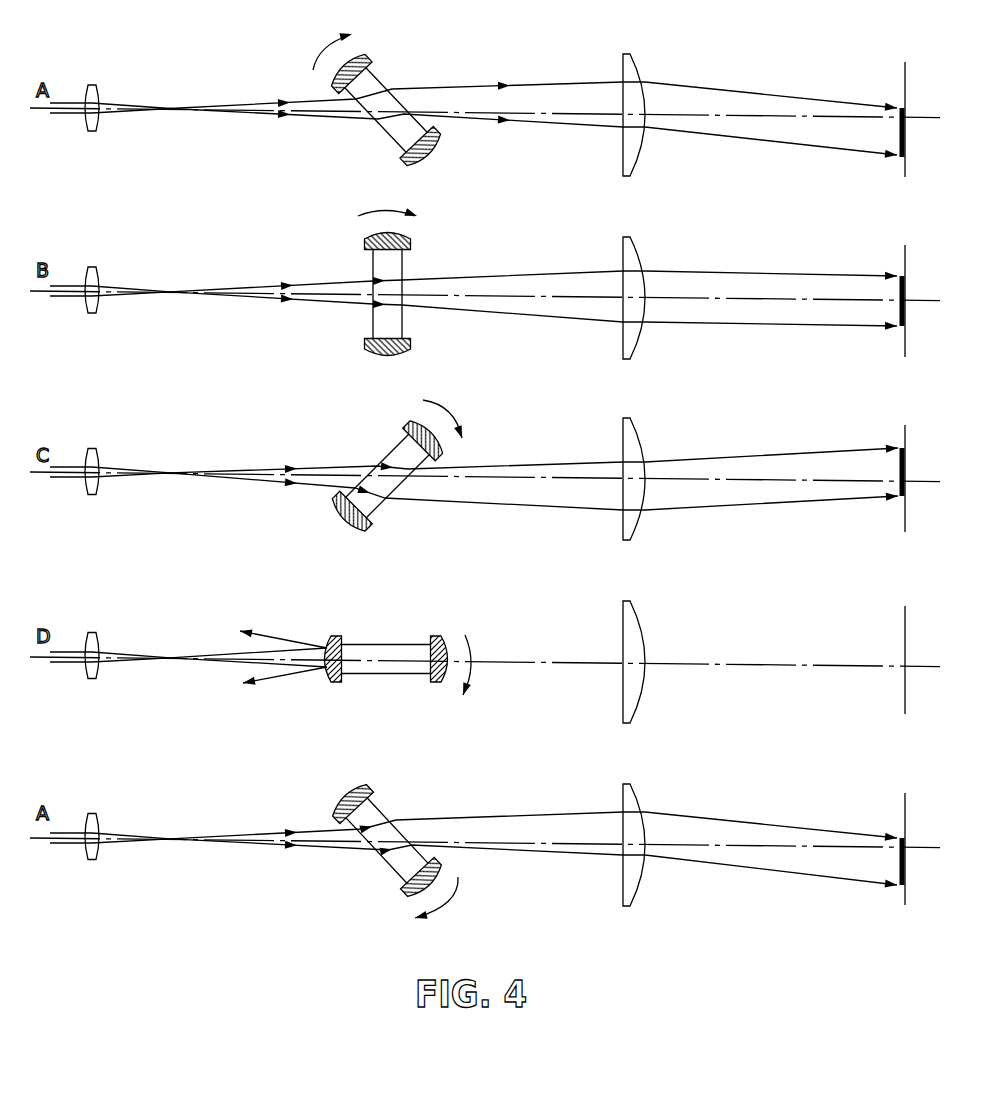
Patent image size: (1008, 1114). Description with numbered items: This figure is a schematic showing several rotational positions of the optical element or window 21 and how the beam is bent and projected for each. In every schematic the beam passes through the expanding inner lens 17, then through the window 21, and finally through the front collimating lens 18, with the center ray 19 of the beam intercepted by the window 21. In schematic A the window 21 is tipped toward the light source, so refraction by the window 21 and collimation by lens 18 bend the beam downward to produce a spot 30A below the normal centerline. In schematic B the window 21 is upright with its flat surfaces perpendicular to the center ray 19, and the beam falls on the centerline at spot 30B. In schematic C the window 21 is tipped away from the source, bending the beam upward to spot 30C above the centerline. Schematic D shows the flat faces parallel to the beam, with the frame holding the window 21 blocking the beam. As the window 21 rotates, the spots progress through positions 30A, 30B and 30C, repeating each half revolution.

The inner lens 17 is at (96, 92).
The front collimating lens 18 is at (630, 66).
The center ray 19 is at (735, 117).
The optical element or window 21 is at (370, 80).
The spot of light 30A is at (905, 122).
The spot of light 30B is at (903, 292).
The spot of light 30C is at (903, 470).